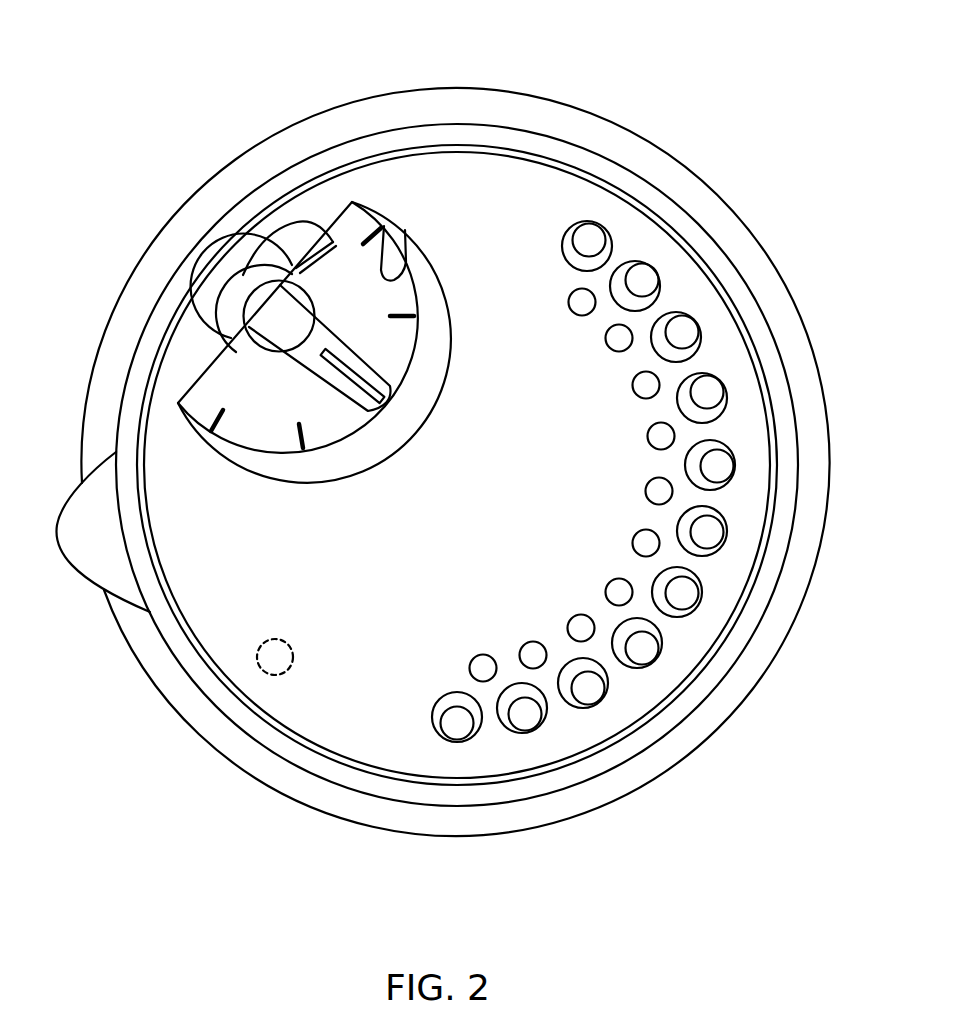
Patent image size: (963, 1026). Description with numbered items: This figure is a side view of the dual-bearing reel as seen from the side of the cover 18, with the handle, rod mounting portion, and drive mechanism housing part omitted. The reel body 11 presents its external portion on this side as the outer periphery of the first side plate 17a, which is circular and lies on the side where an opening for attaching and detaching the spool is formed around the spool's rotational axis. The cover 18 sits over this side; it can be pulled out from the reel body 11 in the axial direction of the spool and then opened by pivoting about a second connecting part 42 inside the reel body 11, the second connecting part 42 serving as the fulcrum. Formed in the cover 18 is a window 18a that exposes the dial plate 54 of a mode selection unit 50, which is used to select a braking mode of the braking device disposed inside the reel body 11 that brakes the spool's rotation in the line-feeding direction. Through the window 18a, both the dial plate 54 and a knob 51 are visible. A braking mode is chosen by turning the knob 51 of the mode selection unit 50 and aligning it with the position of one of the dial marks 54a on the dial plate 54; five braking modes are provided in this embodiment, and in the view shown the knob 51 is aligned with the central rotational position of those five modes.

The reel body 11 is at (591, 90).
The first side plate 17a is at (643, 192).
The cover 18 is at (326, 722).
The window 18a is at (388, 223).
The second connecting part 42 is at (262, 672).
The mode selection unit 50 is at (272, 232).
The knob 51 is at (318, 335).
The dial plate 54 is at (247, 387).
The dial marks 54a is at (213, 390).